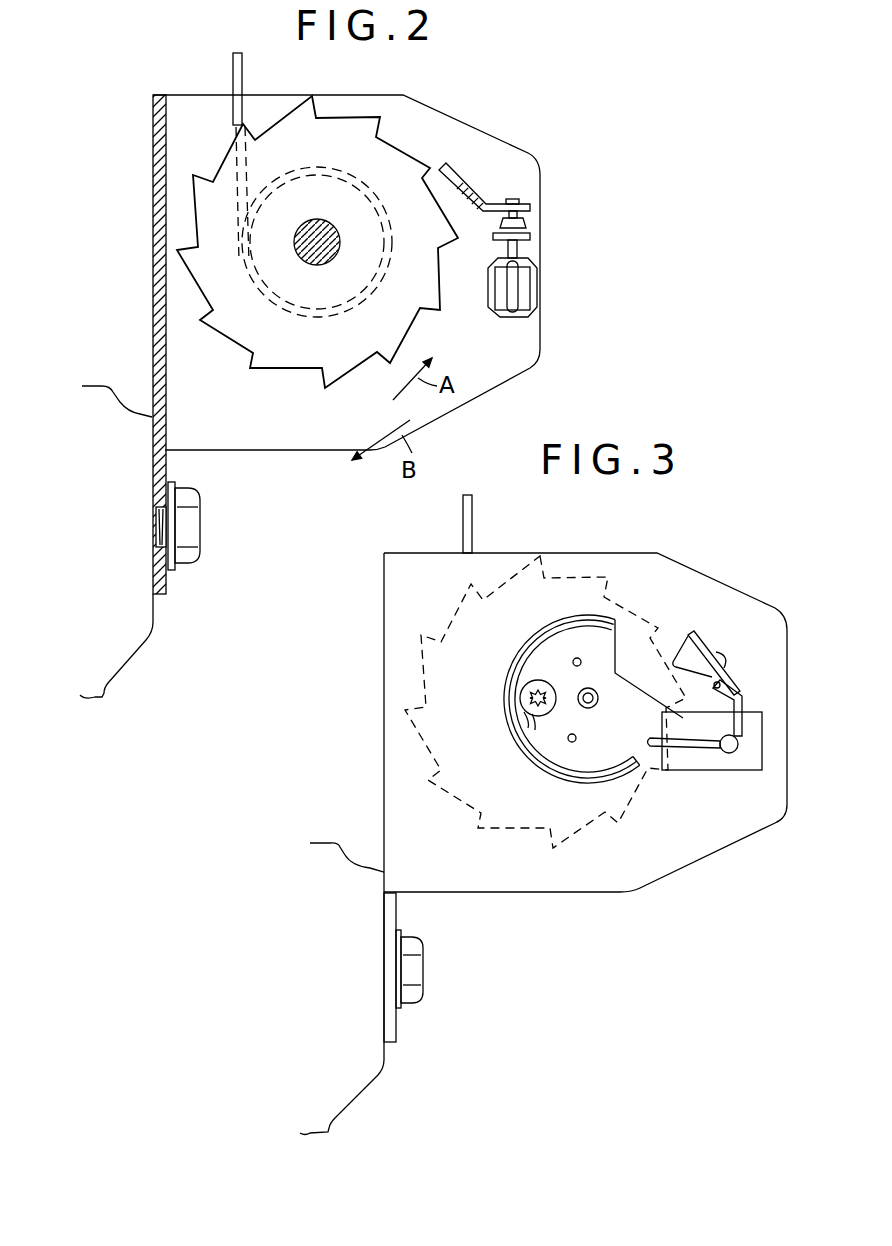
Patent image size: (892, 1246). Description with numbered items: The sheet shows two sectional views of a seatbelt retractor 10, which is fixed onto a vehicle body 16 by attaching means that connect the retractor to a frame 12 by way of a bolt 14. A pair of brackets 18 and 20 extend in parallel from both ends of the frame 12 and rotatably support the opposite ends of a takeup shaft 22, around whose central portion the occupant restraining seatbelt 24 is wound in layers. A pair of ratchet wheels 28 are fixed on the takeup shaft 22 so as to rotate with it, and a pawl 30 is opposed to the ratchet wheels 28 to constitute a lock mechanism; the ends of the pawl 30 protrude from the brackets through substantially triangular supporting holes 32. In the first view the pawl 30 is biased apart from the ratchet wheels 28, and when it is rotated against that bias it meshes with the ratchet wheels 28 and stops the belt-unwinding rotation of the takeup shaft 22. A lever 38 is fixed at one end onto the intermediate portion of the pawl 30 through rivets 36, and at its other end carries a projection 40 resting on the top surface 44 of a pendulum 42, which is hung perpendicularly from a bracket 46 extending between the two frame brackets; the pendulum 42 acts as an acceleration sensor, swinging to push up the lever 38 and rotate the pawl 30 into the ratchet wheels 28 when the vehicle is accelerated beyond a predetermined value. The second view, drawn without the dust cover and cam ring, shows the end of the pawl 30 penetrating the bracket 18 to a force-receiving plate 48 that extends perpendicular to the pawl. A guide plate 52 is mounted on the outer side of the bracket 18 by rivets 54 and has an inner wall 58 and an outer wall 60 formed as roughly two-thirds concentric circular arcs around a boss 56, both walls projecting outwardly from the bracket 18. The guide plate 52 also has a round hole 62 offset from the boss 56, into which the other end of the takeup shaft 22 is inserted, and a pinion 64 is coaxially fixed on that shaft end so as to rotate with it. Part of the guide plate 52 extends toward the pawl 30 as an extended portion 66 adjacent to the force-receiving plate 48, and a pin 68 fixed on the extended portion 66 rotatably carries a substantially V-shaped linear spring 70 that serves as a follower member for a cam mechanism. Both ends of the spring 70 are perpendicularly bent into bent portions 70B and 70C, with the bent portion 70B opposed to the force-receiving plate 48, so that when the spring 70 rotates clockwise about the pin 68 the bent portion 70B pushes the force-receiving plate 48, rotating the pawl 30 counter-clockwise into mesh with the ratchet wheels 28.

In FIG. 2, the seatbelt retractor 10 is at (460, 97).
In FIG. 3, the seatbelt retractor 10 is at (727, 558).
In FIG. 2, the frame 12 is at (167, 465).
In FIG. 3, the frame 12 is at (400, 912).
In FIG. 2, the bolt 14 is at (197, 527).
In FIG. 3, the bolt 14 is at (422, 973).
In FIG. 2, the vehicle body 16 is at (145, 620).
In FIG. 3, the vehicle body 16 is at (375, 1063).
In FIG. 3, the bracket 18 is at (750, 615).
In FIG. 2, the bracket 20 is at (488, 140).
In FIG. 2, the takeup shaft 22 is at (317, 220).
In FIG. 3, the takeup shaft 22 is at (525, 682).
In FIG. 2, the seatbelt 24 is at (242, 72).
In FIG. 3, the seatbelt 24 is at (463, 522).
In FIG. 2, the ratchet wheels 28 is at (397, 157).
In FIG. 3, the ratchet wheels 28 is at (512, 568).
In FIG. 2, the pawl 30 is at (452, 168).
In FIG. 3, the pawl 30 is at (687, 633).
In FIG. 3, the supporting holes 32 is at (713, 655).
In FIG. 2, the rivets 36 is at (480, 190).
In FIG. 2, the lever 38 is at (497, 203).
In FIG. 2, the projection 40 is at (533, 217).
In FIG. 2, the pendulum 42 is at (527, 283).
In FIG. 2, the top surface 44 is at (500, 220).
In FIG. 2, the bracket 46 is at (537, 237).
In FIG. 3, the force-receiving plate 48 is at (720, 684).
In FIG. 3, the guide plate 52 is at (580, 643).
In FIG. 3, the rivets 54 is at (572, 660).
In FIG. 3, the boss 56 is at (598, 706).
In FIG. 3, the inner wall 58 is at (531, 748).
In FIG. 3, the outer wall 60 is at (633, 775).
In FIG. 3, the round hole 62 is at (525, 711).
In FIG. 3, the pinion 64 is at (525, 697).
In FIG. 3, the extended portion 66 is at (750, 743).
In FIG. 3, the pin 68 is at (731, 752).
In FIG. 3, the linear spring 70 is at (740, 708).
In FIG. 3, the bent portion 70B is at (716, 690).
In FIG. 3, the bent portion 70C is at (658, 745).